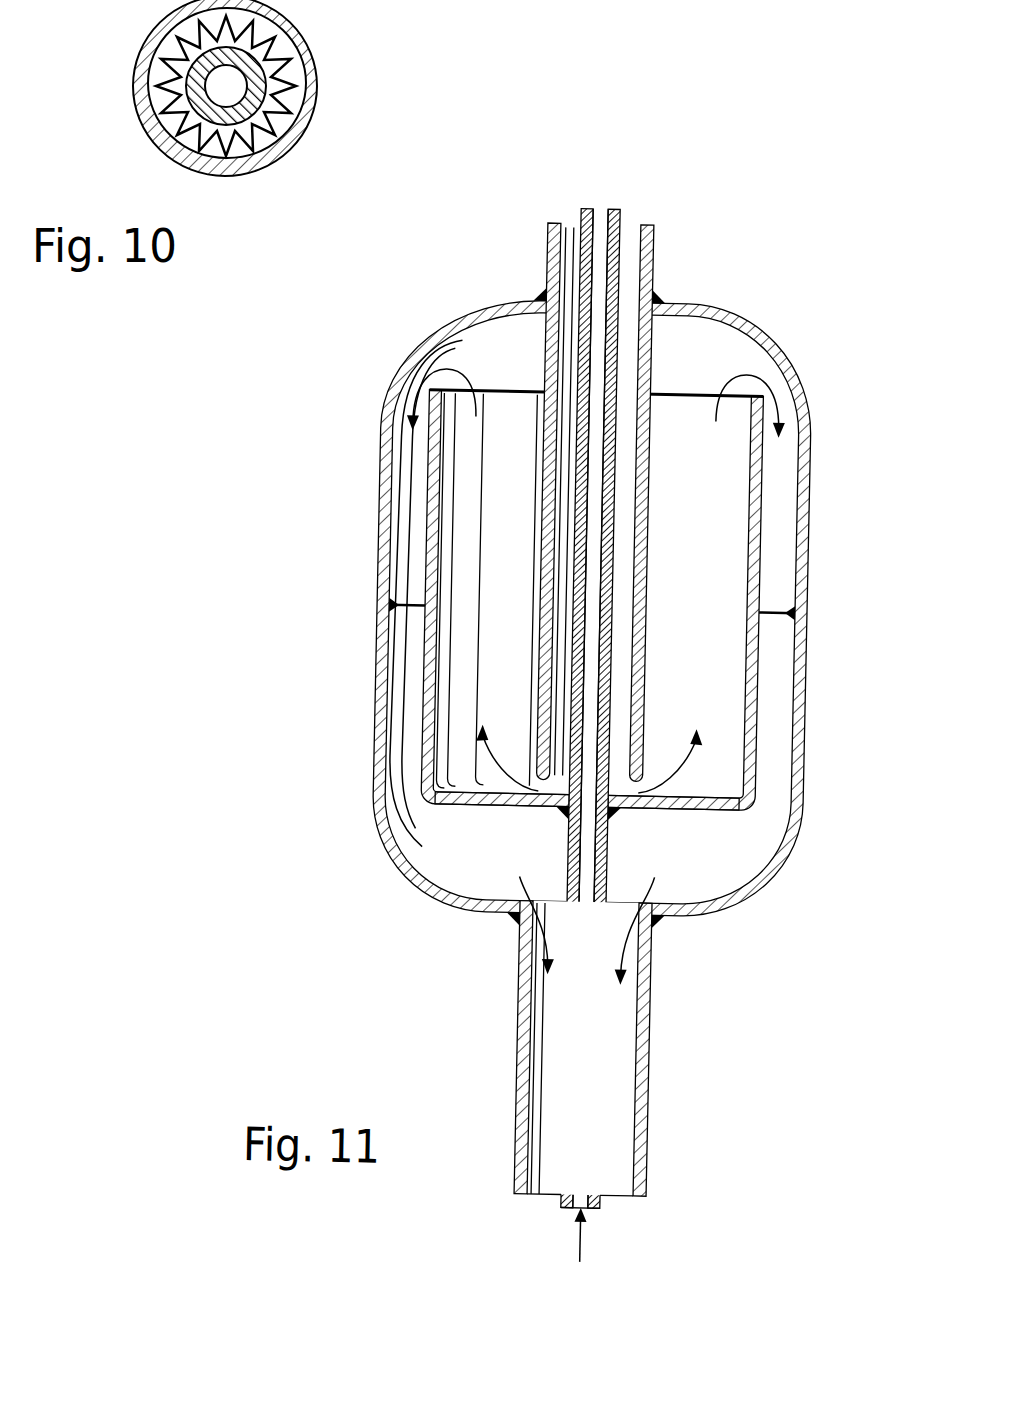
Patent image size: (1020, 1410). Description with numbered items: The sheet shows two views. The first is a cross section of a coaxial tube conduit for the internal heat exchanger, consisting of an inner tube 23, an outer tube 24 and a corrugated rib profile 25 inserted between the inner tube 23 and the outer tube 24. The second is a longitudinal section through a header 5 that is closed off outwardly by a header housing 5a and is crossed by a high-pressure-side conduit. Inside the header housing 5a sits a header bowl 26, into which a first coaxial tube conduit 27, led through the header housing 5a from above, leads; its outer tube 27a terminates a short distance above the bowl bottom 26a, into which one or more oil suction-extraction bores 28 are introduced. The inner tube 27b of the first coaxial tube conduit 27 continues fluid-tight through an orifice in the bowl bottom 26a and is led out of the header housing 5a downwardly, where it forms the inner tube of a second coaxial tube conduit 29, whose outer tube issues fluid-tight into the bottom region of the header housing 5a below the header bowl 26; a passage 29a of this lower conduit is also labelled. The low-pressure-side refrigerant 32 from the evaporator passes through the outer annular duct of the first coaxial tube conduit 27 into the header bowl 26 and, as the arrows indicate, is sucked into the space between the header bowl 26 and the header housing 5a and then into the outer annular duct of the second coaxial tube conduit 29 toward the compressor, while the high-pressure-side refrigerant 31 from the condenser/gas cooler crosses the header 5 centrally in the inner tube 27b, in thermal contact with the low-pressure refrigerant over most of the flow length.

In FIG. 10, the inner tube 23 is at (300, 50).
In FIG. 10, the outer tube 24 is at (298, 132).
In FIG. 10, the corrugated rib profile 25 is at (270, 87).
In FIG. 11, the header 5 is at (632, 736).
In FIG. 11, the header housing 5a is at (796, 516).
In FIG. 11, the header bowl 26 is at (747, 579).
In FIG. 11, the bowl bottom 26a is at (497, 809).
In FIG. 11, the first coaxial tube conduit 27 is at (655, 710).
In FIG. 11, the outer tube 27a is at (644, 532).
In FIG. 11, the inner tube 27b is at (602, 480).
In FIG. 11, the oil suction-extraction bore 28 is at (702, 799).
In FIG. 11, the second coaxial tube conduit 29 is at (642, 1050).
In FIG. 11, the outlet passage 29a is at (657, 1132).
In FIG. 11, the high-pressure-side refrigerant 31 is at (594, 1242).
In FIG. 11, the low-pressure-side refrigerant 32 is at (664, 924).